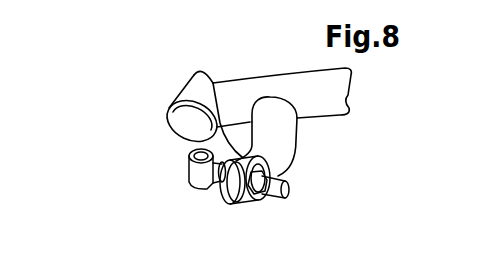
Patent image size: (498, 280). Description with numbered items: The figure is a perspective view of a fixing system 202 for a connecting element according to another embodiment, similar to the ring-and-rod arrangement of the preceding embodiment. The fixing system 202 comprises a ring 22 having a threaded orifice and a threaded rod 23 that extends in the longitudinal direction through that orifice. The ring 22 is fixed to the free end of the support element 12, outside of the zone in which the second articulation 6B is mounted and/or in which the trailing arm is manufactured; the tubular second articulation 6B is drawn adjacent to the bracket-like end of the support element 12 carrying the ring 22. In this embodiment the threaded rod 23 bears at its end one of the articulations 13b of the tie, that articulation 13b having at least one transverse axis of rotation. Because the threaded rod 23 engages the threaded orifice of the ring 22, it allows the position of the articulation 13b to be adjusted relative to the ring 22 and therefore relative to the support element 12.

The fixing system 202 is at (112, 116).
The second articulation 6B is at (192, 88).
The support element 12 is at (285, 133).
The articulation 13b is at (189, 165).
The ring 22 is at (234, 203).
The threaded rod 23 is at (289, 189).